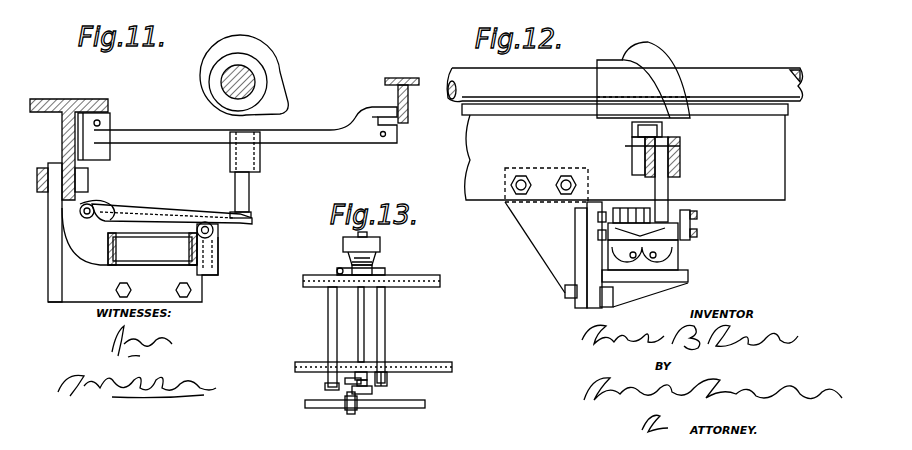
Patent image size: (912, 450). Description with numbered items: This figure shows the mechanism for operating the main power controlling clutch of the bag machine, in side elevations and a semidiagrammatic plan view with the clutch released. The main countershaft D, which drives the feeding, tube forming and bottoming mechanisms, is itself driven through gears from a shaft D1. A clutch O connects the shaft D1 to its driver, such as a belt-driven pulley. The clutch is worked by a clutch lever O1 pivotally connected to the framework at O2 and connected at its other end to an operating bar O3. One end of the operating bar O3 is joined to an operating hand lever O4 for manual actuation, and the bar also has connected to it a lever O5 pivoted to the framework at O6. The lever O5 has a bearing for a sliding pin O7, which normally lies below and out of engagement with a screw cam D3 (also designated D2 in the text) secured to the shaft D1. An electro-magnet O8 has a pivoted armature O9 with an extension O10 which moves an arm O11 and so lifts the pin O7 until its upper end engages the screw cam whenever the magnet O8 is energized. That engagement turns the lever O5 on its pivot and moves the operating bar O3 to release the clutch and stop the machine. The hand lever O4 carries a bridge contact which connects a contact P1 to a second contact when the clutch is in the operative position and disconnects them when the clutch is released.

In FIG. 13, the clutch O is at (378, 260).
In FIG. 13, the clutch lever O1 is at (351, 264).
In FIG. 11, the pivotal connection to framework O2 is at (57, 98).
In FIG. 13, the pivotal connection to framework O2 is at (337, 271).
In FIG. 12, the pivotal connection to framework O2 is at (752, 190).
In FIG. 11, the operating bar O3 is at (406, 78).
In FIG. 13, the operating bar O3 is at (386, 320).
In FIG. 13, the operating hand lever O4 is at (388, 380).
In FIG. 11, the lever O5 is at (327, 144).
In FIG. 13, the lever O5 is at (350, 389).
In FIG. 12, the lever O5 is at (682, 147).
In FIG. 11, the pivot O6 is at (110, 121).
In FIG. 13, the pivot O6 is at (346, 382).
In FIG. 11, the sliding pin O7 is at (250, 194).
In FIG. 12, the sliding pin O7 is at (672, 193).
In FIG. 11, the electro-magnet O8 is at (172, 258).
In FIG. 11, the pivoted armature O9 is at (218, 253).
In FIG. 12, the pivoted armature O9 is at (680, 251).
In FIG. 11, the extension O10 is at (153, 232).
In FIG. 11, the arm O11 is at (121, 212).
In FIG. 12, the arm O11 is at (642, 232).
In FIG. 13, the main countershaft D is at (330, 410).
In FIG. 11, the shaft D1 is at (220, 83).
In FIG. 13, the shaft D1 is at (366, 344).
In FIG. 12, the shaft D1 is at (712, 84).
In FIG. 13, the screw cam D2 is at (382, 246).
In FIG. 11, the screw cam D3 is at (262, 54).
In FIG. 13, the screw cam D3 is at (362, 414).
In FIG. 12, the screw cam D3 is at (652, 58).
In FIG. 13, the contact P1 is at (452, 368).